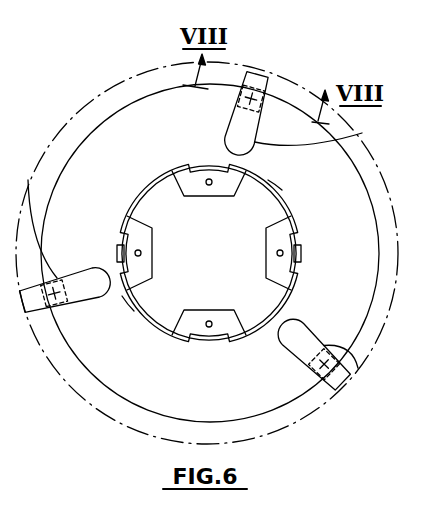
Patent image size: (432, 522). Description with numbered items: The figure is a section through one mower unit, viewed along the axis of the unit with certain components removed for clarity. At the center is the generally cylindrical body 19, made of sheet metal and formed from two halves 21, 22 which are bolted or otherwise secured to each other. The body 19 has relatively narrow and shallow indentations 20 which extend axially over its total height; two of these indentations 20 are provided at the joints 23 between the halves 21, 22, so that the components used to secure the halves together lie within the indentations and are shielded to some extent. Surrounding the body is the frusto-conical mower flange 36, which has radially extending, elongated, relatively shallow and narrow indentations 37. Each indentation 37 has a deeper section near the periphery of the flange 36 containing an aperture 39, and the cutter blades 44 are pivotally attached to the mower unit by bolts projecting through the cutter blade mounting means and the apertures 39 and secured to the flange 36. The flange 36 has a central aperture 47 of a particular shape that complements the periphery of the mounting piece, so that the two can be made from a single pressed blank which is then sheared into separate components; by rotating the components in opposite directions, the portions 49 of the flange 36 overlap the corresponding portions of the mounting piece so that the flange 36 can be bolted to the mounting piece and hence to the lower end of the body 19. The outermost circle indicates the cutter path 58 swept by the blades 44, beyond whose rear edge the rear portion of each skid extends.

The cylindrical body 19 is at (132, 192).
The indentations 20 is at (211, 162).
The half of cylindrical body 21 is at (128, 302).
The half of cylindrical body 22 is at (276, 188).
The joints 23 is at (117, 252).
The mower flange 36 is at (72, 143).
The indentations 37 is at (28, 180).
The aperture 39 is at (262, 100).
The cutter blades 44 is at (258, 72).
The central aperture 47 is at (150, 260).
The portions of flange 49 is at (210, 197).
The cutter path 58 is at (72, 388).